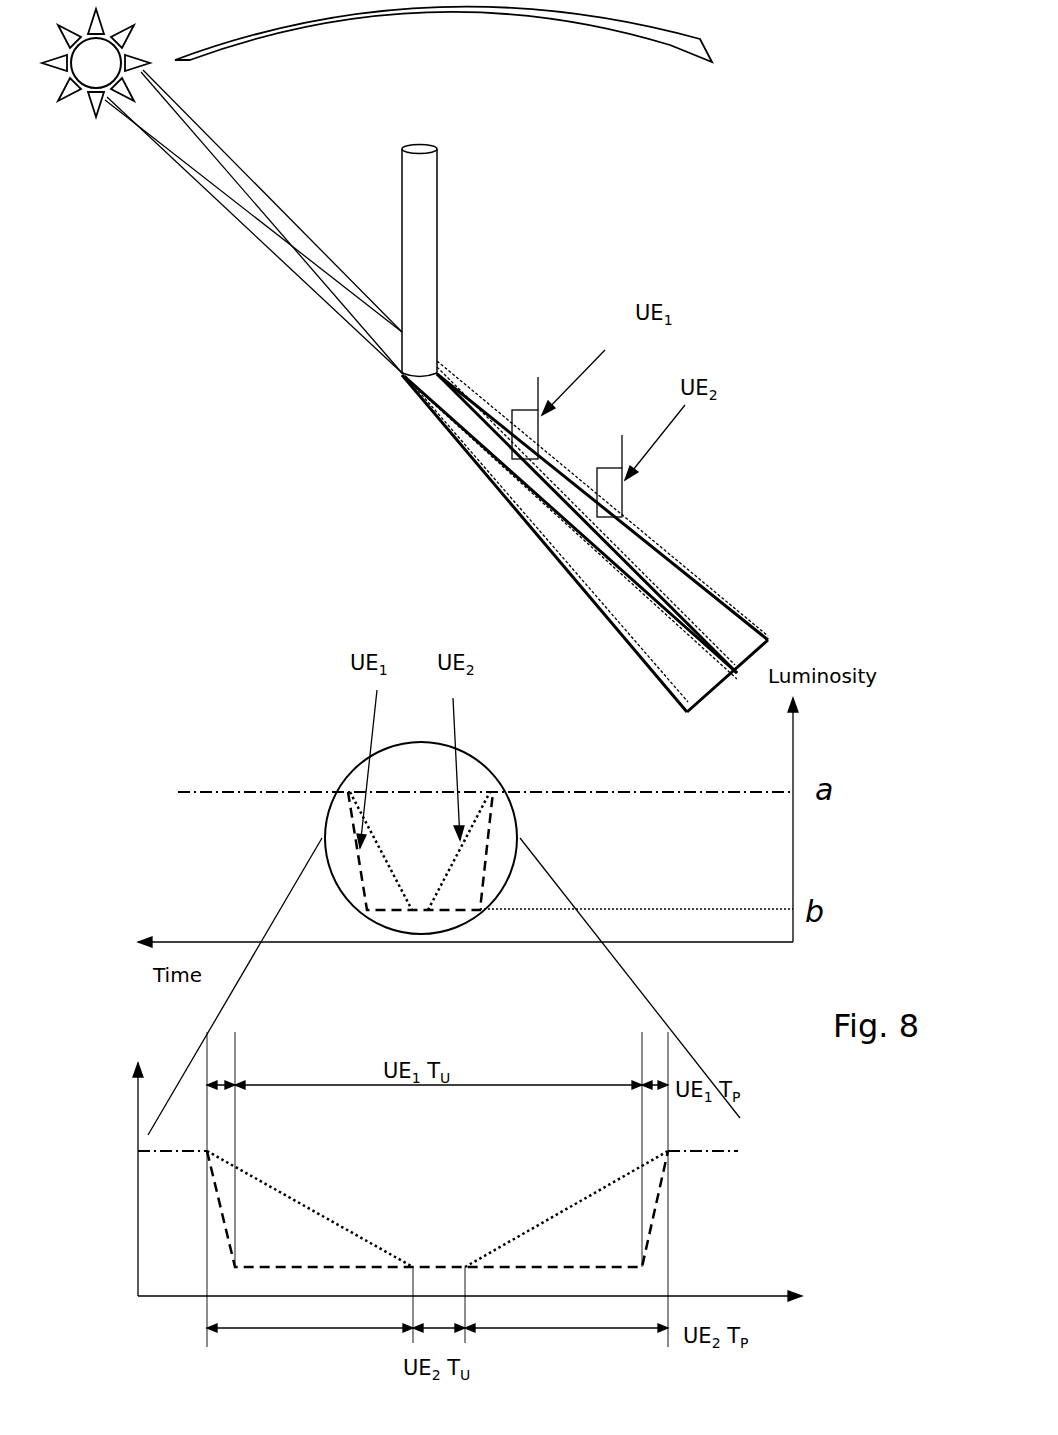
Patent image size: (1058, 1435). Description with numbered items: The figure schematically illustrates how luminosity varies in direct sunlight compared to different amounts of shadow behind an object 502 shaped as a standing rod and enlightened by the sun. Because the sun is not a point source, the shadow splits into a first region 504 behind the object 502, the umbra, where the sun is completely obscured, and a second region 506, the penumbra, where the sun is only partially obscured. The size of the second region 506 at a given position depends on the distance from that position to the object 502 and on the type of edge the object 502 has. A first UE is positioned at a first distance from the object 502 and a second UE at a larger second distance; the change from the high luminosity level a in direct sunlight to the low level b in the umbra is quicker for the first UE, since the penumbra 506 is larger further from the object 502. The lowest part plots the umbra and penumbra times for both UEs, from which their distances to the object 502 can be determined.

The object 502 is at (400, 184).
The first region 504 is at (463, 407).
The second region 506 is at (670, 552).